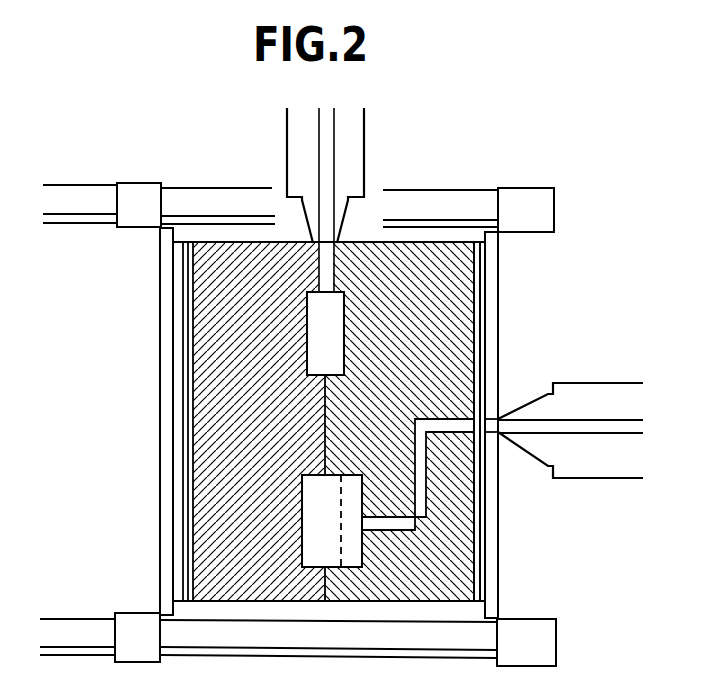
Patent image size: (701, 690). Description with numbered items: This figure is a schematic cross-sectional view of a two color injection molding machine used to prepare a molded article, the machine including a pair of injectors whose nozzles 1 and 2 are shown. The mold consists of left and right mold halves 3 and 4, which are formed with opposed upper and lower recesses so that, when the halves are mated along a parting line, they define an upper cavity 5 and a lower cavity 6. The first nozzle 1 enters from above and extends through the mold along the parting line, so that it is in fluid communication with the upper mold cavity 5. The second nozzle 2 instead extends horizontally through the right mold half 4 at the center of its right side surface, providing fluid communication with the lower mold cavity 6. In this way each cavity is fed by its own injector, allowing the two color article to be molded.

The nozzle 1 is at (327, 158).
The nozzle 2 is at (591, 427).
The left mold half 3 is at (235, 328).
The right mold half 4 is at (433, 580).
The upper cavity 5 is at (335, 338).
The lower cavity 6 is at (353, 548).